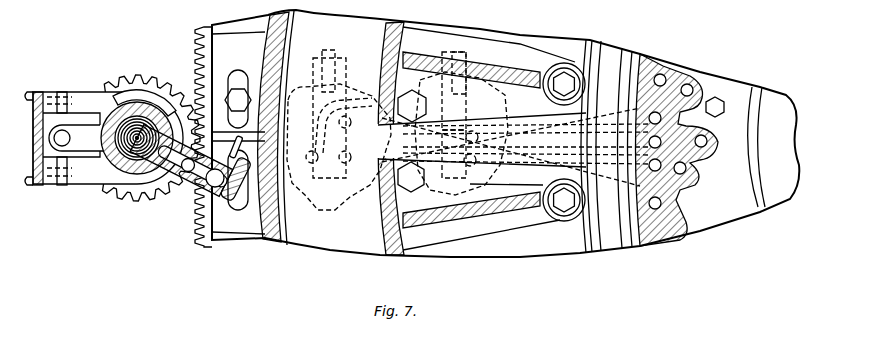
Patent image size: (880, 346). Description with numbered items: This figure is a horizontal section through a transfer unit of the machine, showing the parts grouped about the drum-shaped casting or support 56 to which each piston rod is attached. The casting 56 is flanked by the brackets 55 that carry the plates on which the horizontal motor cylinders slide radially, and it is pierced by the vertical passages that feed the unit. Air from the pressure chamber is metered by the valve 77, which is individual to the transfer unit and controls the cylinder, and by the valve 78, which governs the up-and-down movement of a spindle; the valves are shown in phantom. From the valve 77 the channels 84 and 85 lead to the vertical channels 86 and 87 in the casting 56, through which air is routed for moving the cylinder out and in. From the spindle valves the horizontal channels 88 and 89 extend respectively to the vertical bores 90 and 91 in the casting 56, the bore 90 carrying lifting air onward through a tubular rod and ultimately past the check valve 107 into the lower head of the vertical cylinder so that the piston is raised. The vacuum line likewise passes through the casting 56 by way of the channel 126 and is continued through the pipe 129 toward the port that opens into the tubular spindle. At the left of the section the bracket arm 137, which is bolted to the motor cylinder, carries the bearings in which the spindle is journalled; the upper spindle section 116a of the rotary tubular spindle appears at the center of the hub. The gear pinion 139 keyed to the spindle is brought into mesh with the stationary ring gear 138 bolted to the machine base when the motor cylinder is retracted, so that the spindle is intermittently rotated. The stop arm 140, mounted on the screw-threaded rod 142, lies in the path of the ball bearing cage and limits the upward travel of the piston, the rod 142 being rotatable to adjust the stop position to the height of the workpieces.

The brackets 55 is at (425, 62).
The drum-shaped casting or support 56 is at (677, 216).
The valve 77 is at (504, 184).
The valve 78 is at (303, 183).
The channel 84 is at (482, 126).
The channel 85 is at (478, 165).
The vertical channel 86 is at (704, 143).
The vertical channel 87 is at (648, 142).
The horizontal channel 88 is at (350, 88).
The horizontal channel 89 is at (340, 150).
The vertical bore 90 is at (664, 118).
The vertical bore 91 is at (690, 171).
The check valve 107 is at (188, 172).
The upper spindle section 116a is at (137, 150).
The channel 126 is at (648, 166).
The pipe 129 is at (243, 138).
The bracket arm 137 is at (88, 180).
The stationary ring gear 138 is at (200, 53).
The gear pinion 139 is at (183, 70).
The stop arm 140 is at (162, 106).
The screw-threaded rod 142 is at (67, 133).